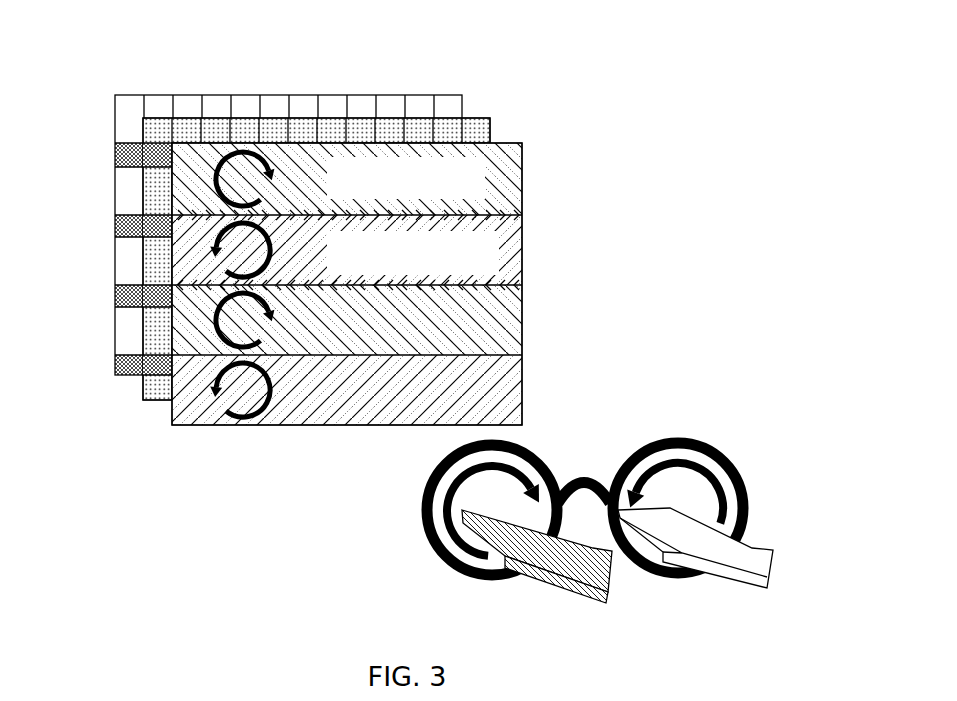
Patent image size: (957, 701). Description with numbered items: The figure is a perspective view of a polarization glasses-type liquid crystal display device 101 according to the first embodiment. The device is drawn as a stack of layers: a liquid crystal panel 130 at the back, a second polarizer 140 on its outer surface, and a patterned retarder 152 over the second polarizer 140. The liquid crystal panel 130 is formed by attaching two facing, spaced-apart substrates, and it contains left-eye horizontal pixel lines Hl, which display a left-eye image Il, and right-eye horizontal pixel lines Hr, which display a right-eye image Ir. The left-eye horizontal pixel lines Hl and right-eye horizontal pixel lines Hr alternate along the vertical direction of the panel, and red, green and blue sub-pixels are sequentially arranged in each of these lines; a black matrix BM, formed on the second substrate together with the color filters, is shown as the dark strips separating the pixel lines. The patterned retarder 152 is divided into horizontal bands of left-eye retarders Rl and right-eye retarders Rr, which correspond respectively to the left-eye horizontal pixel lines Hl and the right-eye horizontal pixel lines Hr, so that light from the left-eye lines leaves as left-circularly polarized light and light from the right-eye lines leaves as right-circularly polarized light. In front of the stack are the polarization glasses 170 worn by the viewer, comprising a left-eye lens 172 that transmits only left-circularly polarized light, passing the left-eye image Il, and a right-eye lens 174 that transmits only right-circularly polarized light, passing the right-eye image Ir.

The polarization glasses-type liquid crystal display device 101 is at (346, 53).
The liquid crystal panel 130 is at (480, 99).
The second polarizer 140 is at (508, 125).
The patterned retarder 152 is at (420, 284).
The polarization glasses 170 is at (600, 493).
The left-eye lens 172 is at (543, 458).
The right-eye lens 174 is at (640, 443).
The left-eye horizontal pixel lines Hl is at (129, 130).
The right-eye horizontal pixel lines Hr is at (129, 178).
The black matrix BM is at (127, 223).
The left-eye retarders Rl is at (521, 195).
The right-eye retarders Rr is at (521, 239).
The left-eye image Il is at (537, 565).
The right-eye image Ir is at (695, 564).